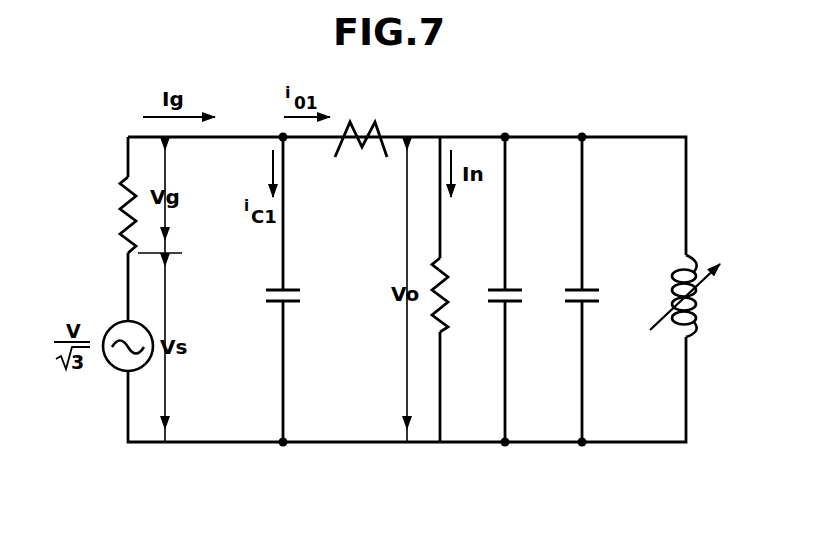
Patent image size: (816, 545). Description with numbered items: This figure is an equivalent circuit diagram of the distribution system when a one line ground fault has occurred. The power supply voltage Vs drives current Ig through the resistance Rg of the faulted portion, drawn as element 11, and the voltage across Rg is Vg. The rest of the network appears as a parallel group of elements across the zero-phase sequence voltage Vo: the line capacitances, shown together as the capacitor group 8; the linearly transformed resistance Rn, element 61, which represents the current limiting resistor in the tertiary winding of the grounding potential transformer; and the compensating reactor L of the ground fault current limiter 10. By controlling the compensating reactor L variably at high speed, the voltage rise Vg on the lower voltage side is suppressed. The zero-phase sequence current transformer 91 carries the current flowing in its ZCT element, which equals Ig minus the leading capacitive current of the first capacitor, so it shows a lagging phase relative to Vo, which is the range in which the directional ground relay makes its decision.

The resistor Rg (source impedance) 11 is at (128, 179).
The zero-phase sequence current transformer 91 is at (364, 152).
The linearly transformed resistance 61 is at (452, 322).
The capacitors C1, C2, C6 8 is at (574, 307).
The ground fault current limiter 10 is at (704, 315).